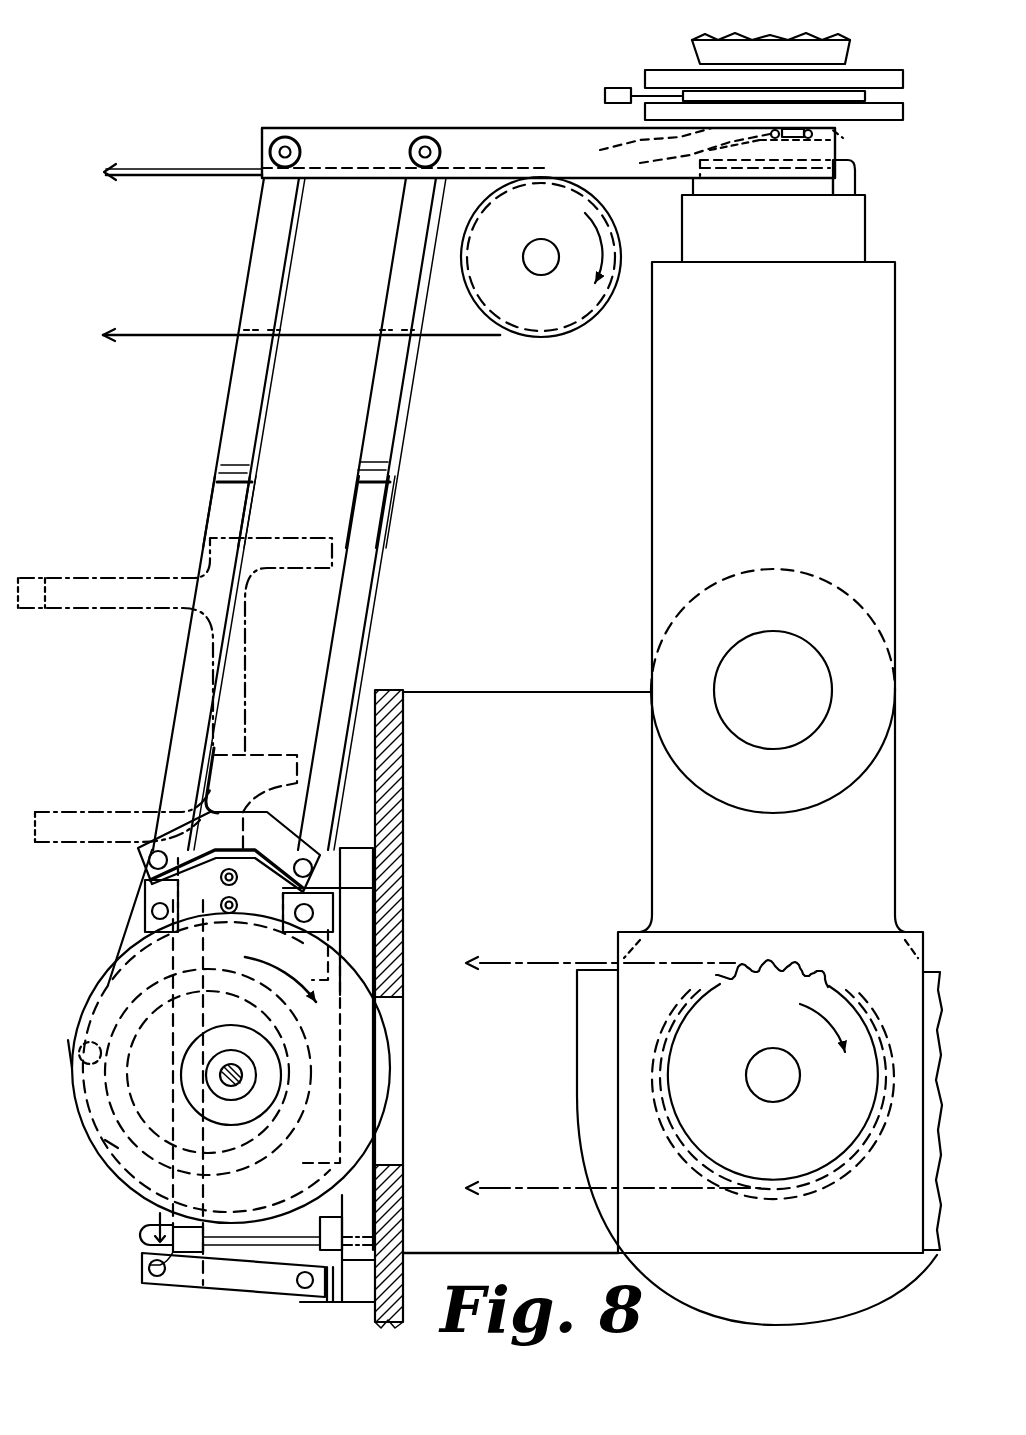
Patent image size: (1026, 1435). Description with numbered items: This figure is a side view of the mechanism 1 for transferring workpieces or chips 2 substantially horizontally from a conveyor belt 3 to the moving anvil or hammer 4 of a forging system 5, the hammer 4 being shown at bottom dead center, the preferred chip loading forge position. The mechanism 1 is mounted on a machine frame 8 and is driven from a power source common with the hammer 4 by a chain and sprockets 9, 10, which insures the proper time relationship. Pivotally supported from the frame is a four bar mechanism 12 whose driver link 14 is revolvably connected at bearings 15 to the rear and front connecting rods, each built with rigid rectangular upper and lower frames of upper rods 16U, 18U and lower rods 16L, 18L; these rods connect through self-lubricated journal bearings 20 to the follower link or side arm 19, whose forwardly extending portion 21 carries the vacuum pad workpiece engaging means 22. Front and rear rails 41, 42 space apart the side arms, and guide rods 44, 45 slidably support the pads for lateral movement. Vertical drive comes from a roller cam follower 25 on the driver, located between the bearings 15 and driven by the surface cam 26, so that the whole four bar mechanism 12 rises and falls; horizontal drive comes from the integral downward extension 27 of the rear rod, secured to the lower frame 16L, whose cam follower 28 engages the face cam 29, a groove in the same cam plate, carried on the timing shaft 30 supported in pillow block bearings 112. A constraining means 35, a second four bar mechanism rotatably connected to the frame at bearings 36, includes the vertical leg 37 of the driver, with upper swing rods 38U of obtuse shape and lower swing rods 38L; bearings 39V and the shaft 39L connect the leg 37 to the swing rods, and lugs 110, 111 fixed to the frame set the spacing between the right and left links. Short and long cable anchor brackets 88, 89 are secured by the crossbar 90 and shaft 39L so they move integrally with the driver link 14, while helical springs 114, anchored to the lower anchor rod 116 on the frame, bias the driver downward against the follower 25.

The mechanism 1 is at (104, 784).
The chip 2 is at (748, 150).
The conveyor belt 3 is at (180, 178).
The hammer 4 is at (784, 460).
The forging system 5 is at (652, 36).
The machine frame 8 is at (400, 688).
The chain 9 is at (540, 962).
The sprocket 10 is at (742, 1030).
The four bar mechanism 12 is at (412, 410).
The driver link 14 is at (230, 894).
The bearings 15 is at (148, 912).
The upper rods 16U is at (228, 398).
The lower rods 16L is at (222, 490).
The upper rods 18U is at (395, 470).
The lower rods 18L is at (362, 498).
The follower link 19 is at (371, 128).
The bearings 20 is at (287, 148).
The forwardly extending portion 21 is at (818, 182).
The workpiece engaging means 22 is at (731, 155).
The cam follower 25 is at (238, 906).
The surface cam 26 is at (390, 1060).
The downward extension 27 is at (130, 932).
The cam follower 28 is at (80, 1044).
The face cam 29 is at (110, 1146).
The timing shaft 30 is at (221, 1077).
The constraining means 35 is at (140, 1290).
The bearings 36 is at (305, 858).
The vertical leg 37 is at (192, 1256).
The upper swing rods 38U is at (238, 846).
The lower swing rods 38L is at (268, 1294).
The bearing 39V is at (148, 862).
The shaft 39L is at (157, 1278).
The front rail 41 is at (855, 150).
The rear rail 42 is at (655, 141).
The guide rod 44 is at (773, 140).
The guide rod 45 is at (830, 129).
The short cable anchor bracket 88 is at (268, 755).
The long cable anchor bracket 89 is at (246, 668).
The crossbar 90 is at (236, 872).
The lug 110 is at (345, 850).
The lug 111 is at (338, 1302).
The bearings 112 is at (333, 950).
The helical springs 114 is at (156, 1224).
The lower anchor rod 116 is at (148, 1247).